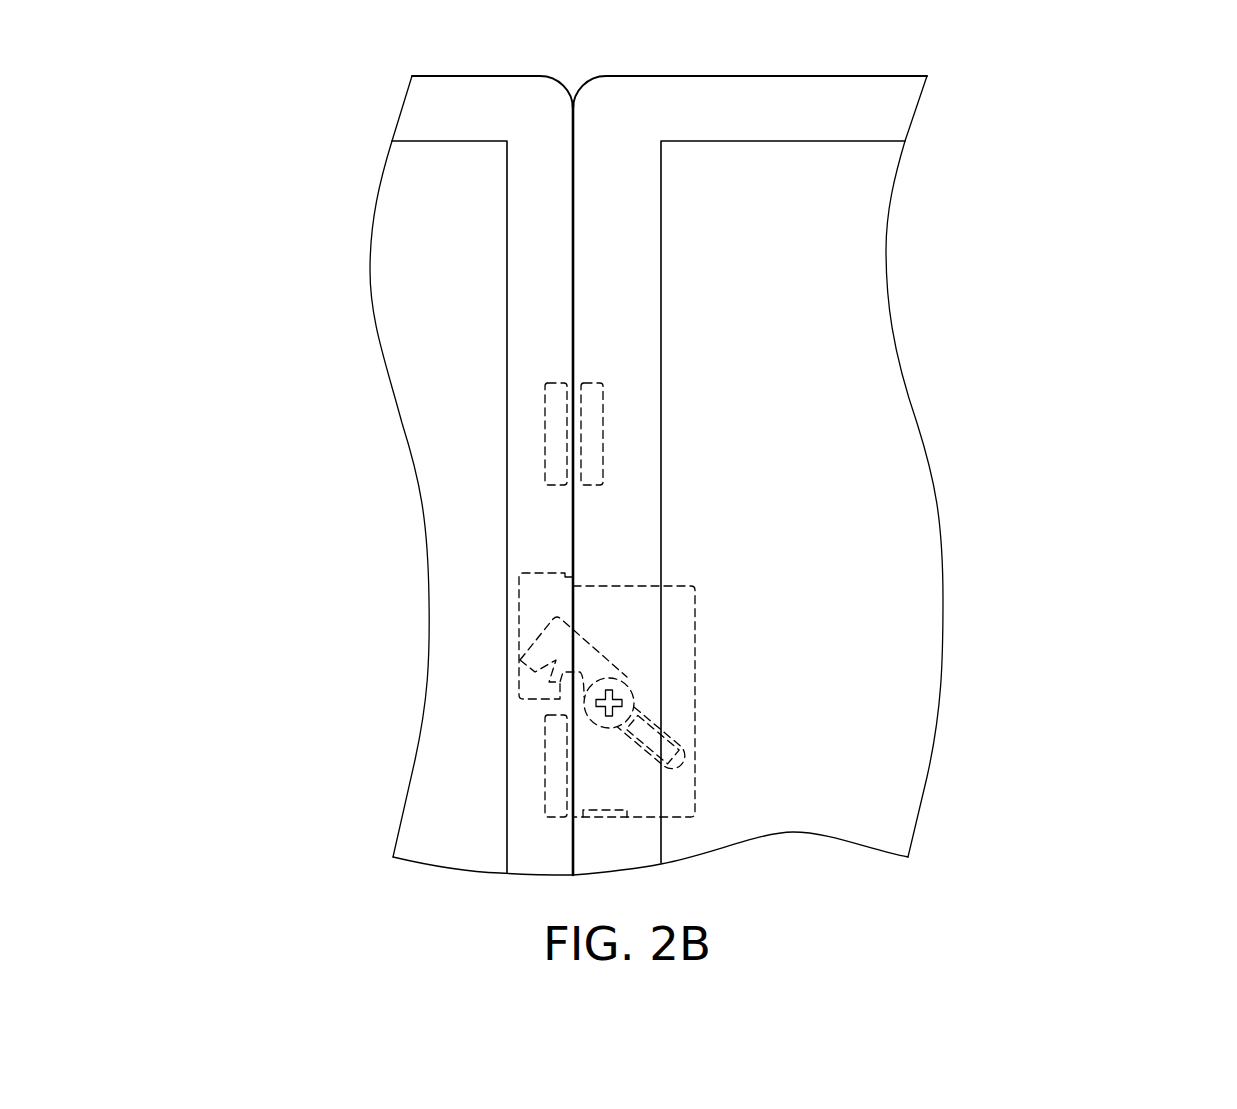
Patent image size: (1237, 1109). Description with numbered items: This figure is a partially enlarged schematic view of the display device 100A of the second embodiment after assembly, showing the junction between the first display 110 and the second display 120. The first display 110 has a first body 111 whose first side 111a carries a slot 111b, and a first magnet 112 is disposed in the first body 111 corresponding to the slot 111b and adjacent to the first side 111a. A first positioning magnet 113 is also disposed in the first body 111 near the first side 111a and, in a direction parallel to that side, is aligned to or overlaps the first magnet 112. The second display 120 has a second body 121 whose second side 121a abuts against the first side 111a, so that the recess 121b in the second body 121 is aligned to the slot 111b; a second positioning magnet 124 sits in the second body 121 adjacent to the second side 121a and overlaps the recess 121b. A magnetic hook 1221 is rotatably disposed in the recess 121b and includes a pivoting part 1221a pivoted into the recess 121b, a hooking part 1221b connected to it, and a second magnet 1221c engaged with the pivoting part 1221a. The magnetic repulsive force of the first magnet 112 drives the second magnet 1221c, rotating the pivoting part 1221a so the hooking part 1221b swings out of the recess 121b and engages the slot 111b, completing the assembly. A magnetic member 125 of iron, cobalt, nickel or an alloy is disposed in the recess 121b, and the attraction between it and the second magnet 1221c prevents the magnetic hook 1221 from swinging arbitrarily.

The display device 100A is at (1223, 872).
The first display 110 is at (338, 199).
The first body 111 is at (415, 107).
The first side 111a is at (580, 118).
The slot 111b is at (519, 603).
The first magnet 112 is at (545, 760).
The first positioning magnet 113 is at (545, 430).
The second display 120 is at (952, 190).
The second body 121 is at (900, 107).
The second side 121a is at (566, 142).
The recess 121b is at (695, 626).
The magnetic hook 1221 is at (635, 703).
The pivoting part 1221a is at (680, 738).
The hooking part 1221b is at (538, 674).
The second magnet 1221c is at (672, 758).
The second positioning magnet 124 is at (603, 430).
The magnetic member 125 is at (613, 818).